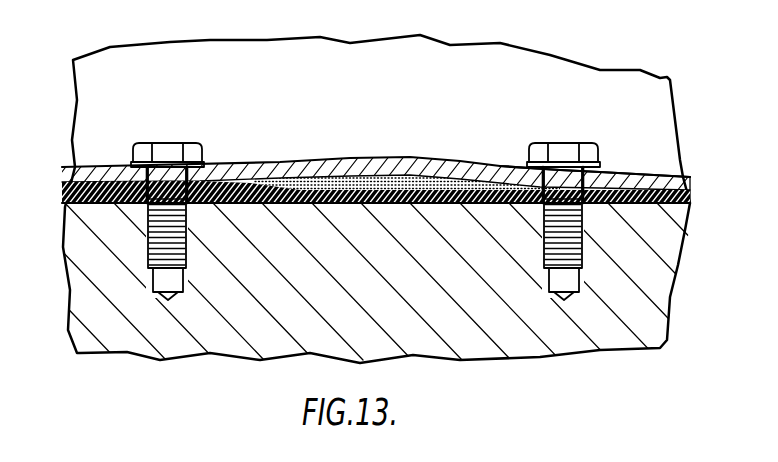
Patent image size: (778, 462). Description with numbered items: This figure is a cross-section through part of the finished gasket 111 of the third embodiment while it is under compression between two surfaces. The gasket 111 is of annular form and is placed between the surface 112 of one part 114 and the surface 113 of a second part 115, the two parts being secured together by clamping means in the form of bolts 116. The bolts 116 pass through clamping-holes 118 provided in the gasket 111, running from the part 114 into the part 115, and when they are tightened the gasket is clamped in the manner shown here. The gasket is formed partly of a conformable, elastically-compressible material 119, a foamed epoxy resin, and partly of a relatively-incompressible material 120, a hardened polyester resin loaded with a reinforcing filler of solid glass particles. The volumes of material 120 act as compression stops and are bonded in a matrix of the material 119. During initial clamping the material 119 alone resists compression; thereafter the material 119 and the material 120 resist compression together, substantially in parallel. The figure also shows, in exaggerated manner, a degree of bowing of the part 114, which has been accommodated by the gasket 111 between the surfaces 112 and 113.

The gasket 111 is at (675, 170).
The surface of part 114 112 is at (427, 177).
The surface of part 115 113 is at (405, 205).
The part 114 is at (657, 170).
The part 115 is at (607, 318).
The bolt 116 is at (540, 240).
The clamping-hole 118 is at (585, 203).
The conformable elastically-compressible material 119 is at (268, 182).
The relatively-incompressible material 120 is at (363, 182).